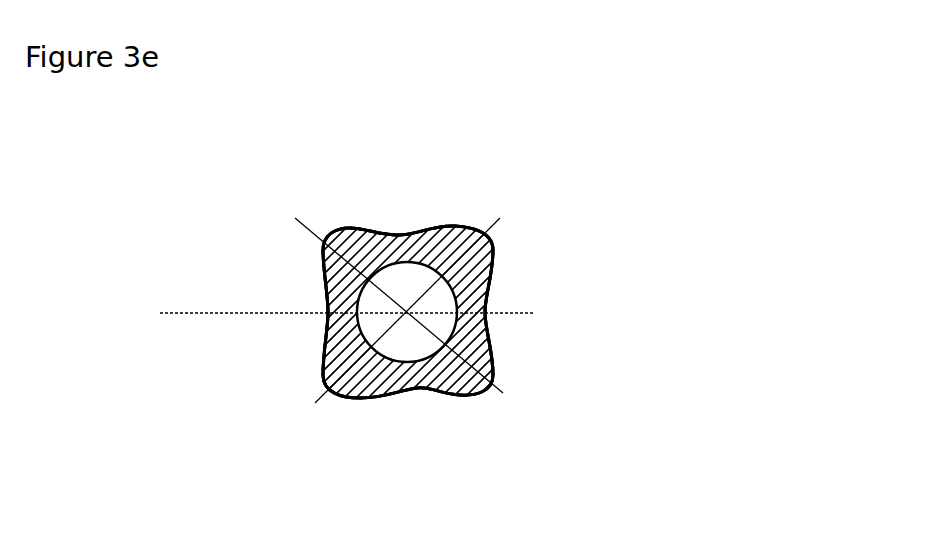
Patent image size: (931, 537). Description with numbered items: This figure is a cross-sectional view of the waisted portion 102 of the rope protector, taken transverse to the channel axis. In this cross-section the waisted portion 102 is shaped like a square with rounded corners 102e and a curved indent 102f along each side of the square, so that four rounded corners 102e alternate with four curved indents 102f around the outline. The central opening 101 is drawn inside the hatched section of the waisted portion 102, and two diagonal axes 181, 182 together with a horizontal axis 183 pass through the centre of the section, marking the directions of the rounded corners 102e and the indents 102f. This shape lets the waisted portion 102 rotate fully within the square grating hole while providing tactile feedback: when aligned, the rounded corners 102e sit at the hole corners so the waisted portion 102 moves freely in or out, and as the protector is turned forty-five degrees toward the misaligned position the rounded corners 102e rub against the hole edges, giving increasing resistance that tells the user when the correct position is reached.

The core 101 is at (439, 302).
The waisted portion 102 is at (493, 263).
The rounded corners 102e is at (338, 233).
The curved indent 102f is at (407, 232).
The first diagonal axis 181 is at (317, 403).
The second diagonal axis 182 is at (503, 390).
The horizontal axis 183 is at (200, 312).